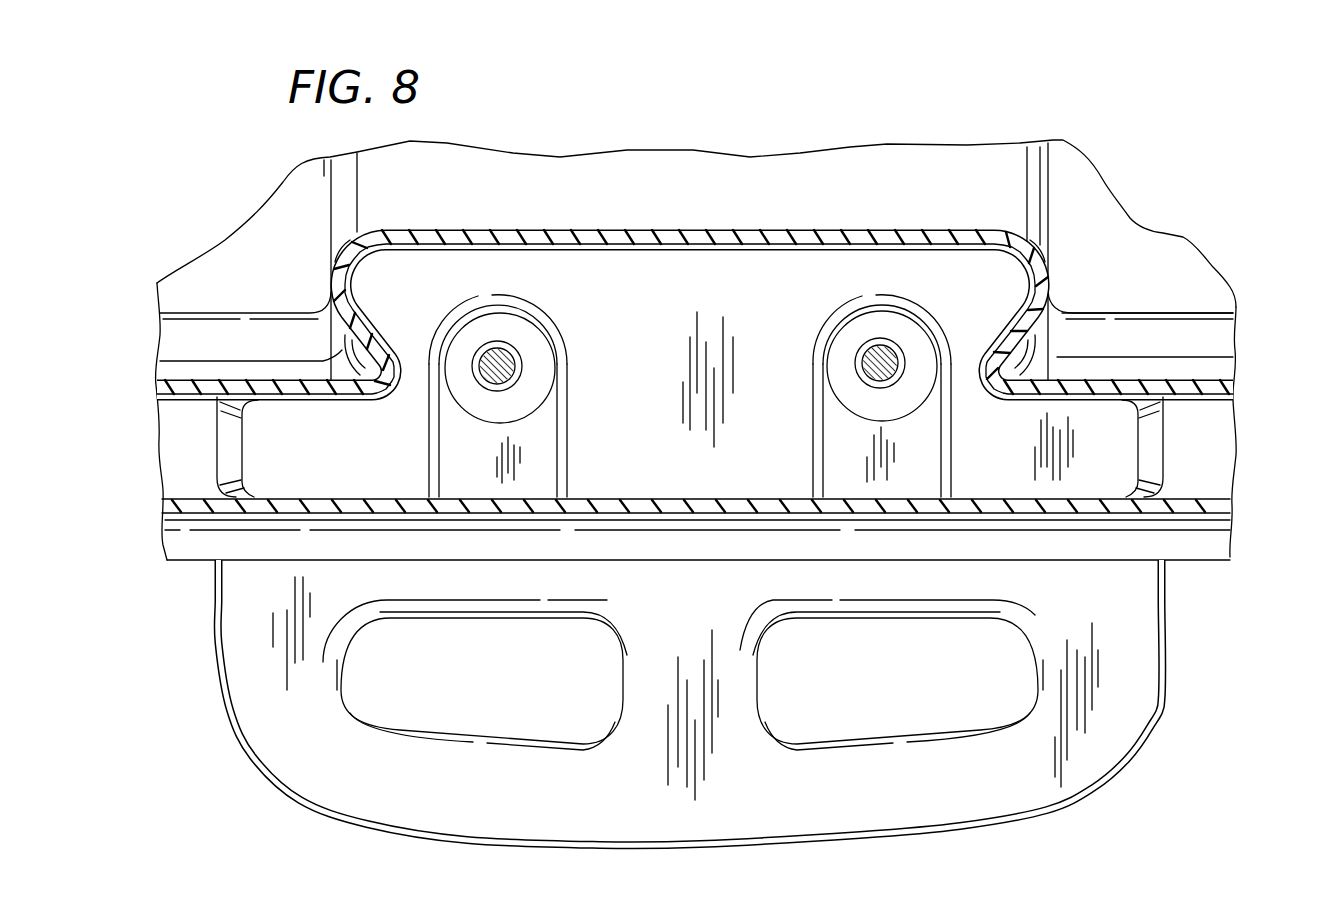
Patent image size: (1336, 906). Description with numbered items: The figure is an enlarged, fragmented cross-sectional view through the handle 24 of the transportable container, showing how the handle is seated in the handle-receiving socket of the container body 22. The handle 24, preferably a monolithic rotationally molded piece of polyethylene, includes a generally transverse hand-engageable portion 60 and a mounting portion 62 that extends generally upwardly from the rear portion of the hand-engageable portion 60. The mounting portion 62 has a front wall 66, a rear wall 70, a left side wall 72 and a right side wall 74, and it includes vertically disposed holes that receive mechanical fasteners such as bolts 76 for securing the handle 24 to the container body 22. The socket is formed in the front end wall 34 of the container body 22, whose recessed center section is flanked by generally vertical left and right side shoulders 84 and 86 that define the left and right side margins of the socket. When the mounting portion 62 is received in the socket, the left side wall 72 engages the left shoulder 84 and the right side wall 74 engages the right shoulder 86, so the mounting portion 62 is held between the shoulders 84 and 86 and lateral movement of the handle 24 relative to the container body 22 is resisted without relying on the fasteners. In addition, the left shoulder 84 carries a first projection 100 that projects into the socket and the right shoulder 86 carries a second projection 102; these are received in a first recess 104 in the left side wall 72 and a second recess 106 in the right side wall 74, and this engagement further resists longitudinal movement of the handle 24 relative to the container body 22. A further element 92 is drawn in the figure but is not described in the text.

The container body 22 is at (241, 250).
The handle 24 is at (185, 604).
The front end wall 34 is at (693, 235).
The hand-engageable portion 60 is at (1168, 646).
The mounting portion 62 is at (1148, 443).
The front wall 66 is at (383, 500).
The rear wall 70 is at (780, 245).
The left side wall 72 is at (373, 252).
The right side wall 74 is at (1027, 237).
The bolt 76 is at (512, 350).
The left side shoulder 84 is at (337, 317).
The right side shoulder 86 is at (1063, 313).
The seal lower flange 92 is at (322, 512).
The first projection 100 is at (337, 357).
The second projection 102 is at (1120, 360).
The first recess 104 is at (405, 330).
The second recess 106 is at (978, 345).